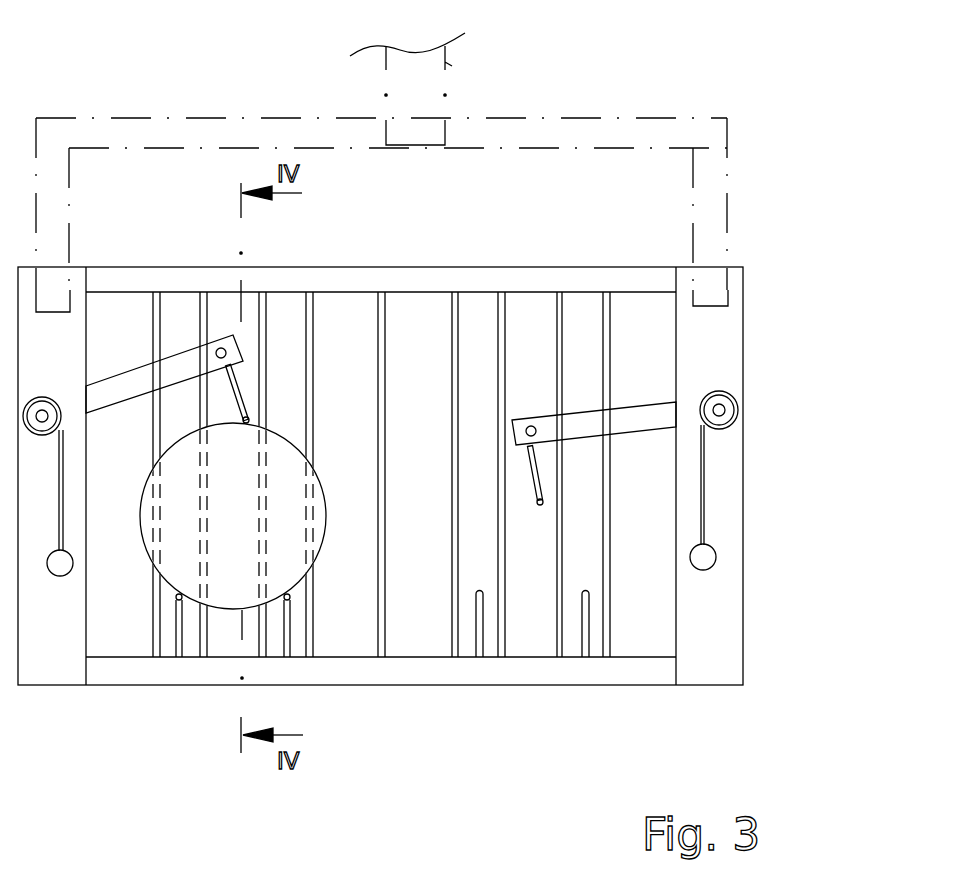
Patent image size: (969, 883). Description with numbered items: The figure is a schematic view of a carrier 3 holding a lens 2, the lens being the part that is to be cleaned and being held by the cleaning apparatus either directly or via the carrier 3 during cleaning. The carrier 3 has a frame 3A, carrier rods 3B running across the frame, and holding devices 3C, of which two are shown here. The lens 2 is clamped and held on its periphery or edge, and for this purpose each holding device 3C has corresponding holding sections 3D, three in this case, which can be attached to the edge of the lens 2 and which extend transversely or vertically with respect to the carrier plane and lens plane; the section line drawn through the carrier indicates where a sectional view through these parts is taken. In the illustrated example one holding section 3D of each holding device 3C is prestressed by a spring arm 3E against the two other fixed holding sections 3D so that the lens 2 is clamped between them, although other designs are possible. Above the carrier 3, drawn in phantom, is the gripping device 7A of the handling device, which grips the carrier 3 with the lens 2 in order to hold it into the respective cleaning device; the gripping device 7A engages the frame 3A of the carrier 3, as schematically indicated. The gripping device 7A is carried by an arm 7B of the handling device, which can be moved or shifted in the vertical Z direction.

The lens 2 is at (233, 568).
The carrier 3 is at (747, 341).
The frame 3A is at (725, 502).
The carrier rods 3B is at (452, 582).
The holding device 3C is at (373, 482).
The holding sections 3D is at (250, 420).
The spring arm 3E is at (115, 388).
The gripping device 7A is at (645, 116).
The arm 7B is at (463, 56).